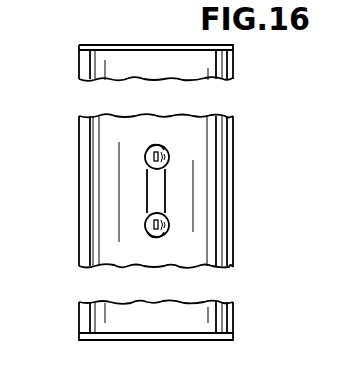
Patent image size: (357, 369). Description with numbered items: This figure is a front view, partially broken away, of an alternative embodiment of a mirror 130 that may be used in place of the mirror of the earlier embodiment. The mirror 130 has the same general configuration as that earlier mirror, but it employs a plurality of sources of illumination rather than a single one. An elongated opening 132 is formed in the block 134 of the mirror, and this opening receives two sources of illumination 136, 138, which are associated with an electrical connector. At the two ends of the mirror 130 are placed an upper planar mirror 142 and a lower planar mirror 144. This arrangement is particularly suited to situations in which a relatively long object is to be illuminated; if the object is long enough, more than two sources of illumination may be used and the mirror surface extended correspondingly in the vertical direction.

The mirror 130 is at (179, 191).
The elongated opening 132 is at (154, 192).
The block 134 is at (234, 249).
The source of illumination 136 is at (145, 157).
The source of illumination 138 is at (146, 223).
The upper planar mirror 142 is at (120, 44).
The lower planar mirror 144 is at (104, 341).